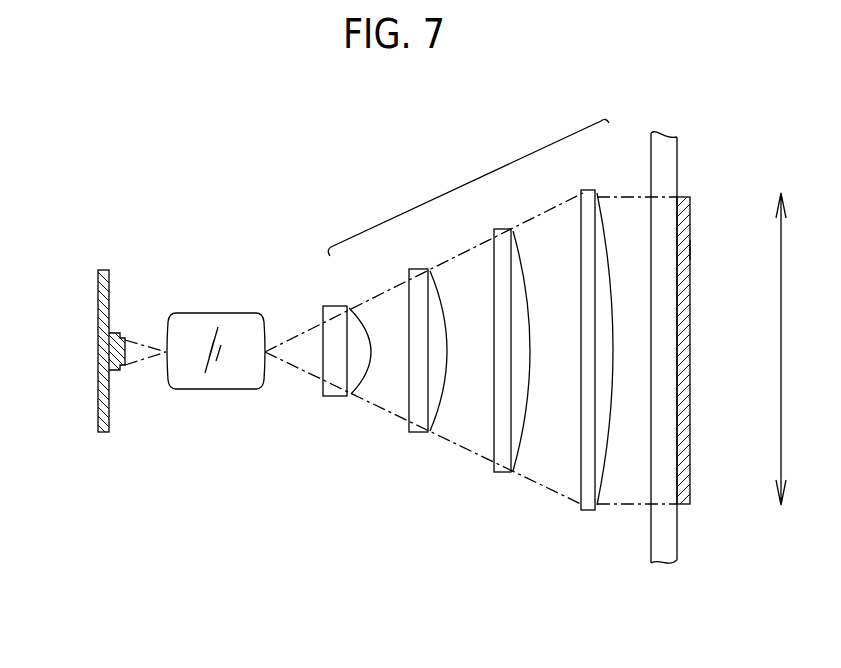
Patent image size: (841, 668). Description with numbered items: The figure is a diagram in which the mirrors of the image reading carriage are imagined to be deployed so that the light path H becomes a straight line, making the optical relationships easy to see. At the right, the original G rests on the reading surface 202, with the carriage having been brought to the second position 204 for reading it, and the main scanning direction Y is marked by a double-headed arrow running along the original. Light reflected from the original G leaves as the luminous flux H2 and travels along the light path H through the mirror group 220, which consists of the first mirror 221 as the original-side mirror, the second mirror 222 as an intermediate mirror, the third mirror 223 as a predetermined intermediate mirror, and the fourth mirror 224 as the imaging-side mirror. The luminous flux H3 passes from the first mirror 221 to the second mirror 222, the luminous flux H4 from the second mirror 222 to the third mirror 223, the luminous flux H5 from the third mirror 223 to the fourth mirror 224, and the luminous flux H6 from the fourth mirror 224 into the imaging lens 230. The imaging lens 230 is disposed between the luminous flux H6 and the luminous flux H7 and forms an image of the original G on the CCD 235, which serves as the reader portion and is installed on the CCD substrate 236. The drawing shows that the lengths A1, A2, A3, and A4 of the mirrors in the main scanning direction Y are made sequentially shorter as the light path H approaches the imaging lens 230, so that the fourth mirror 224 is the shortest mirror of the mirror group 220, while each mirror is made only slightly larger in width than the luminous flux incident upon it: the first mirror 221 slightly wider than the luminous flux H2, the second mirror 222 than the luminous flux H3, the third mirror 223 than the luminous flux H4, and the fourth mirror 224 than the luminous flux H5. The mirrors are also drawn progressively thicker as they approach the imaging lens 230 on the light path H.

The CCD substrate 236 is at (101, 270).
The CCD 235 is at (113, 338).
The imaging lens 230 is at (238, 313).
The mirror group 220 is at (468, 180).
The fourth mirror 224 is at (335, 305).
The third mirror 223 is at (425, 268).
The second mirror 222 is at (508, 228).
The first mirror 221 is at (589, 190).
The reading surface 202 is at (668, 154).
The second position 204 is at (677, 171).
The original G is at (691, 250).
The main scanning direction Y is at (790, 349).
The length of first mirror in main scanning direction A1 is at (612, 349).
The length of second mirror in main scanning direction A2 is at (531, 351).
The length of third mirror in main scanning direction A3 is at (448, 351).
The length of fourth mirror in main scanning direction A4 is at (367, 351).
The light path H is at (390, 515).
The luminous flux from original to first mirror H2 is at (622, 505).
The luminous flux from first mirror to second mirror H3 is at (535, 480).
The luminous flux from second mirror to third mirror H4 is at (457, 440).
The luminous flux from third mirror to fourth mirror H5 is at (372, 405).
The luminous flux from fourth mirror to imaging lens H6 is at (300, 370).
The luminous flux from imaging lens to CCD H7 is at (138, 365).